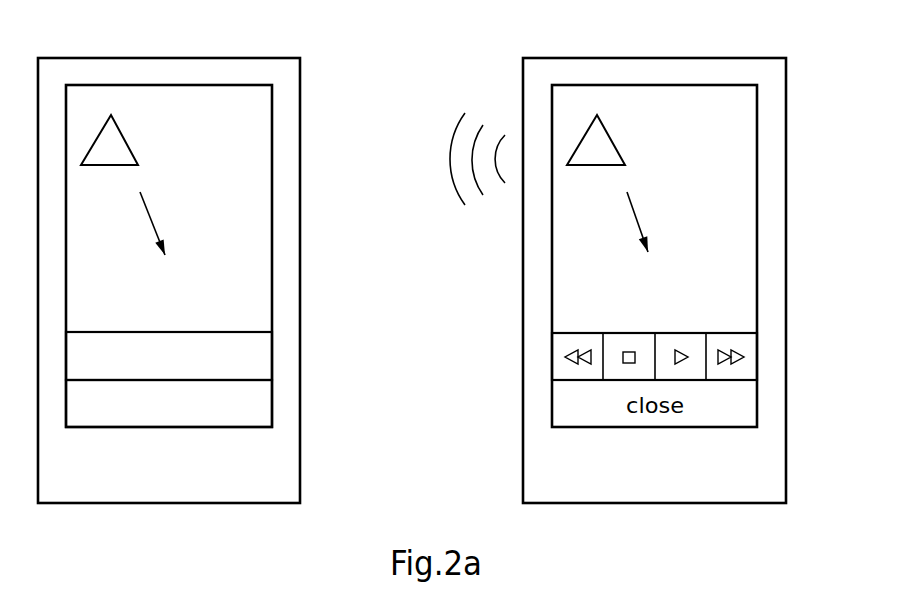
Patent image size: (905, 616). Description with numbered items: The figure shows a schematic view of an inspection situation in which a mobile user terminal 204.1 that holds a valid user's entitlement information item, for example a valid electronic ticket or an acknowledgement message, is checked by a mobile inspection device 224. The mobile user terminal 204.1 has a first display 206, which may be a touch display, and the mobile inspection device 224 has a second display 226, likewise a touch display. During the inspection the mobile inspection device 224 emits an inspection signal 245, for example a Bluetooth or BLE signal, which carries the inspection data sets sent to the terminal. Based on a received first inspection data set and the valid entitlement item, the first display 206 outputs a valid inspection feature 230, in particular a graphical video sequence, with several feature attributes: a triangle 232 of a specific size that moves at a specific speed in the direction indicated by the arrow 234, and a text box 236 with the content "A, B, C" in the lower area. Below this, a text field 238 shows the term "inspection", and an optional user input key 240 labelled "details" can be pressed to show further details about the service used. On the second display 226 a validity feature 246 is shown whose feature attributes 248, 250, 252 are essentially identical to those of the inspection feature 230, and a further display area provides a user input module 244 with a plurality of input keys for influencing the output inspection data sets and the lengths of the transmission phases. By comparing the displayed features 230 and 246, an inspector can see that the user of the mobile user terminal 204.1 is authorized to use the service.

The mobile user terminal 204.1 is at (85, 58).
The first display 206 is at (238, 85).
The inspection feature 230 is at (230, 143).
The triangle 232 is at (128, 143).
The arrow 234 is at (152, 214).
The text box 236 is at (213, 297).
The text field 238 is at (262, 358).
The user input key 240 is at (262, 405).
The inspection signal 245 is at (452, 138).
The mobile inspection device 224 is at (570, 58).
The second display 226 is at (722, 85).
The validity feature 246 is at (715, 143).
The feature attribute 248 is at (614, 143).
The feature attribute 250 is at (637, 214).
The feature attribute 252 is at (700, 297).
The user input module 244 is at (752, 365).